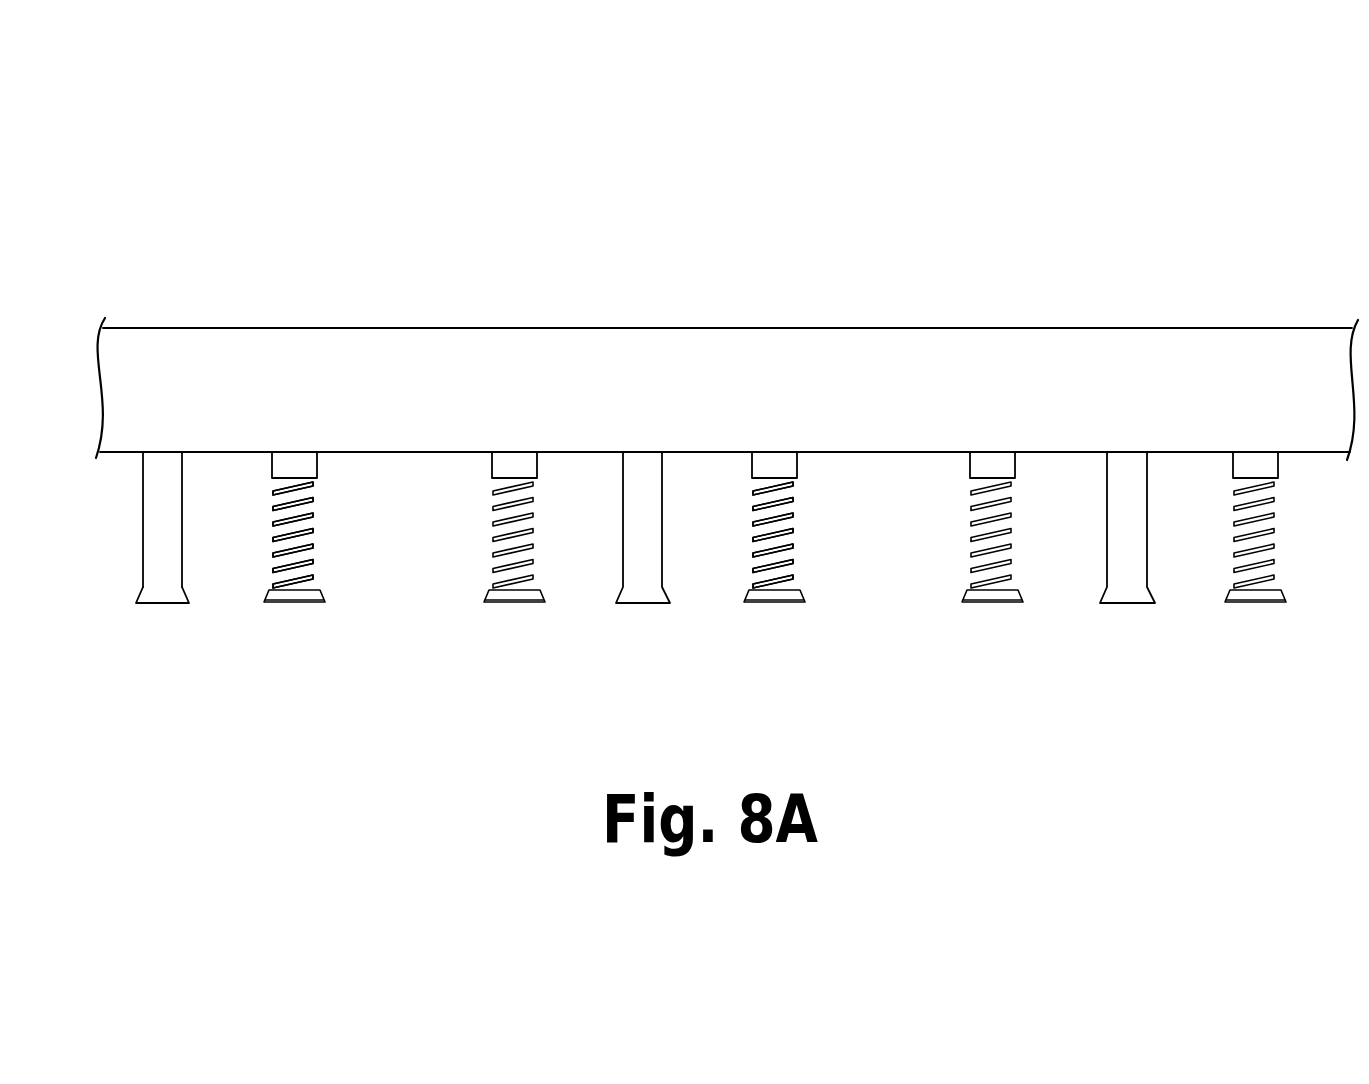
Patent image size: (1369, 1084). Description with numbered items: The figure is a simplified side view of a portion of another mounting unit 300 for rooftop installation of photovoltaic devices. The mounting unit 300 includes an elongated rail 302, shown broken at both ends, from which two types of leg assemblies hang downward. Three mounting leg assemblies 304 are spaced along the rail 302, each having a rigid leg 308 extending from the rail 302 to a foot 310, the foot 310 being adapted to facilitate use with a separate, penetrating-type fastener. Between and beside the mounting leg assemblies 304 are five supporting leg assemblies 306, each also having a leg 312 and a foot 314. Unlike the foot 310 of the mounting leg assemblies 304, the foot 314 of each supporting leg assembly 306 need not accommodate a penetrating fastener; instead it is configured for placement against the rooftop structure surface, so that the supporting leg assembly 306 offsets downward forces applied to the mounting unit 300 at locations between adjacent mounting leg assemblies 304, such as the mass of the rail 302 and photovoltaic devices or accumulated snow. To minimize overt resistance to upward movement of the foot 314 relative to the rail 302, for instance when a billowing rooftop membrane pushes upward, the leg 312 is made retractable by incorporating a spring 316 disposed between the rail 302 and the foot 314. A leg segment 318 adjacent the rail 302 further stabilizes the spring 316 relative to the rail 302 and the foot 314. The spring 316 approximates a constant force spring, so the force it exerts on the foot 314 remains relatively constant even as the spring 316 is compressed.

The mounting unit 300 is at (662, 212).
The rail 302 is at (750, 350).
The mounting leg assembly 304 is at (613, 588).
The supporting leg assembly 306 is at (779, 569).
The rigid leg 308 is at (150, 546).
The foot 310 is at (145, 598).
The leg 312 is at (316, 532).
The foot 314 is at (320, 595).
The spring 316 is at (272, 540).
The leg segment 318 is at (278, 468).